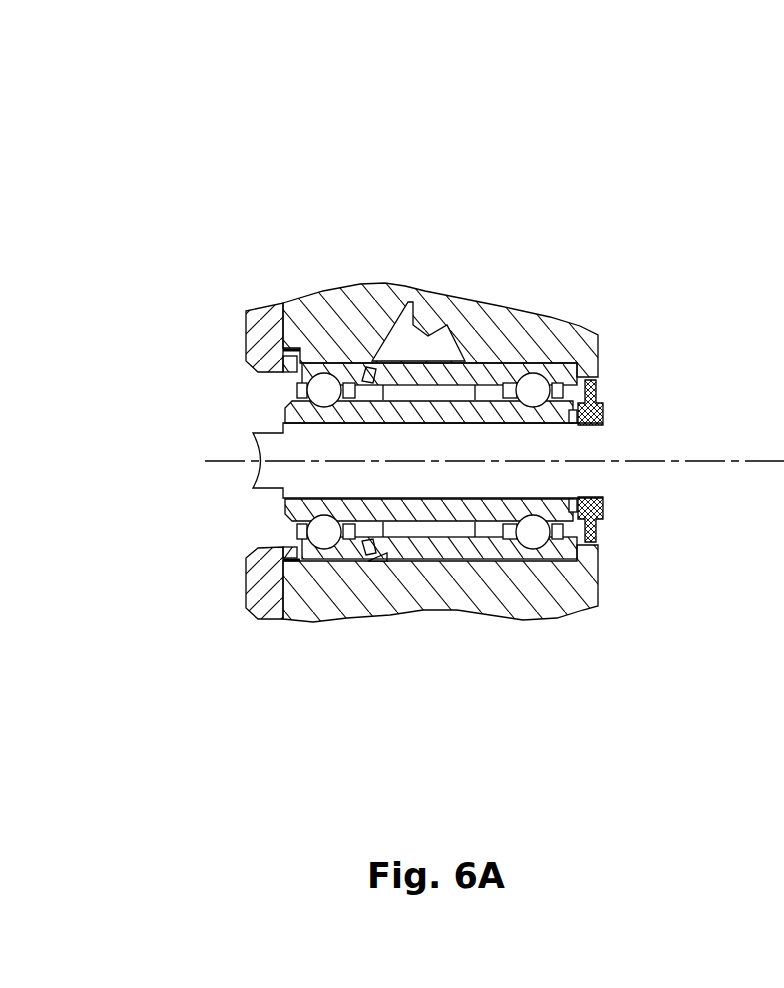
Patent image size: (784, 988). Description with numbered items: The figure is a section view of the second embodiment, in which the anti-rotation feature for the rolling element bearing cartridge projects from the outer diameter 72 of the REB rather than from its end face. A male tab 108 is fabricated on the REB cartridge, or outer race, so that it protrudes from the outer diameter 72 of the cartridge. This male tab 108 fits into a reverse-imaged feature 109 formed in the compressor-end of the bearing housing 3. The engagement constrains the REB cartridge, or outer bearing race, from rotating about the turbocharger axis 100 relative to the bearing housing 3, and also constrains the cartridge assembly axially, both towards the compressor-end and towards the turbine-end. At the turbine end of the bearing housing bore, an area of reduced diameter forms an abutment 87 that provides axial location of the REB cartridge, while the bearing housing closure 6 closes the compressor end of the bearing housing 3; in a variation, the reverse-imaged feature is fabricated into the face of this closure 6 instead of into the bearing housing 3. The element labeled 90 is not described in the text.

The bearing housing 3 is at (513, 328).
The bearing housing closure 6 is at (263, 327).
The male tab 108 is at (290, 350).
The reverse-imaged feature 109 is at (298, 552).
The outer diameter of the REB 72 is at (448, 553).
The bearing housing abutment 87 is at (585, 370).
The seal 90 is at (600, 532).
The turbocharger axis 100 is at (672, 462).